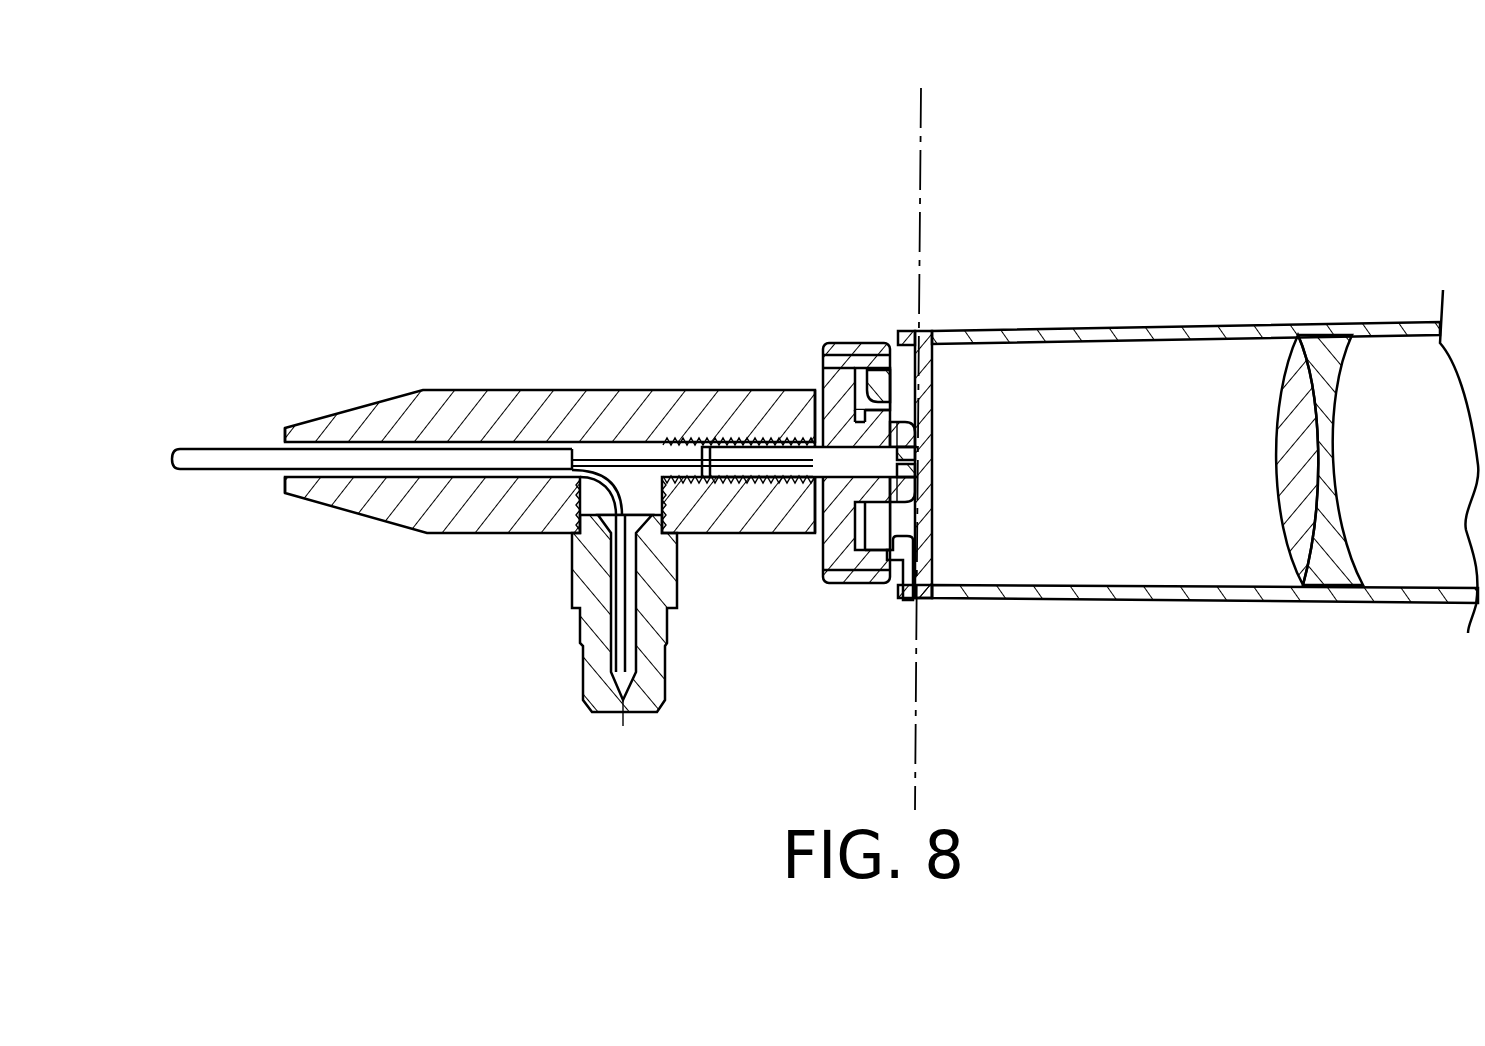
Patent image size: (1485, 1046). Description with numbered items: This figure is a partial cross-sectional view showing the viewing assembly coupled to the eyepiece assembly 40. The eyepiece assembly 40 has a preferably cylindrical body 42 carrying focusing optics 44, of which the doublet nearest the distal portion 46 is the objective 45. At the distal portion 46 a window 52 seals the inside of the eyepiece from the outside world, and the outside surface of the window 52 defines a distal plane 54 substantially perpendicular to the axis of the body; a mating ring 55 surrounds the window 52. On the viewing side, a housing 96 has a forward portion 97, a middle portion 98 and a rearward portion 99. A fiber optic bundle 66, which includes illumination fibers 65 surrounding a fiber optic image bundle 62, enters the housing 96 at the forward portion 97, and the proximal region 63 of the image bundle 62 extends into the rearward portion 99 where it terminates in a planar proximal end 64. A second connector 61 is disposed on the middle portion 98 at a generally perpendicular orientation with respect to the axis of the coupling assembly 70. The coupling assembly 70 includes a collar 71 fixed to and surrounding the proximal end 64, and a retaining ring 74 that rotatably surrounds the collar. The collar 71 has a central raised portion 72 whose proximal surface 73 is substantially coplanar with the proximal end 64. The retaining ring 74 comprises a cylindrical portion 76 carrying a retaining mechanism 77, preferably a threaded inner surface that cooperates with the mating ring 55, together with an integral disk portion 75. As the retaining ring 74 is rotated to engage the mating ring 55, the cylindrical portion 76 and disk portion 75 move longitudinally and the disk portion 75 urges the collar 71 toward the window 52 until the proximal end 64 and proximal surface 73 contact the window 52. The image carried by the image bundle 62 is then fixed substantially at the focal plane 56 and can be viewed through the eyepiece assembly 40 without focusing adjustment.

The eyepiece assembly 40 is at (1291, 312).
The body 42 is at (1180, 325).
The focusing optics 44 is at (1345, 522).
The objective 45 is at (1290, 503).
The distal portion 46 is at (920, 330).
The window 52 is at (930, 385).
The distal plane 54 is at (932, 766).
The mating ring 55 is at (903, 552).
The focal plane 56 is at (934, 126).
The second connector 61 is at (585, 700).
The fiber optic image bundle 62 is at (635, 455).
The proximal region 63 is at (835, 458).
The planar proximal end 64 is at (928, 463).
The illumination fibers 65 is at (570, 533).
The fiber optic bundle 66 is at (205, 462).
The coupling assembly 70 is at (812, 551).
The collar 71 is at (923, 447).
The central raised portion 72 is at (918, 455).
The proximal surface 73 is at (930, 452).
The retaining ring 74 is at (835, 577).
The disk portion 75 is at (823, 574).
The cylindrical portion 76 is at (880, 571).
The retaining mechanism 77 is at (900, 362).
The housing 96 is at (528, 382).
The forward portion 97 is at (343, 427).
The middle portion 98 is at (572, 413).
The rearward portion 99 is at (787, 433).